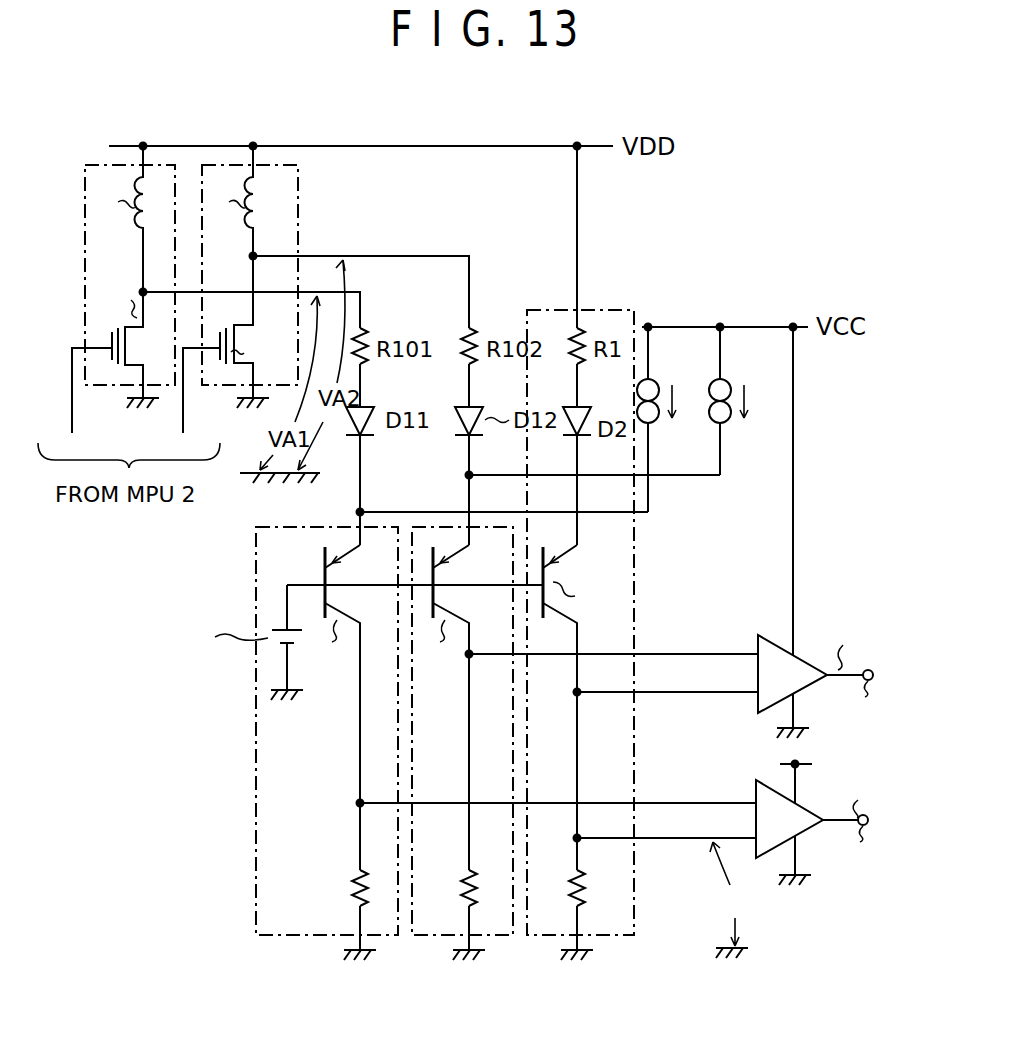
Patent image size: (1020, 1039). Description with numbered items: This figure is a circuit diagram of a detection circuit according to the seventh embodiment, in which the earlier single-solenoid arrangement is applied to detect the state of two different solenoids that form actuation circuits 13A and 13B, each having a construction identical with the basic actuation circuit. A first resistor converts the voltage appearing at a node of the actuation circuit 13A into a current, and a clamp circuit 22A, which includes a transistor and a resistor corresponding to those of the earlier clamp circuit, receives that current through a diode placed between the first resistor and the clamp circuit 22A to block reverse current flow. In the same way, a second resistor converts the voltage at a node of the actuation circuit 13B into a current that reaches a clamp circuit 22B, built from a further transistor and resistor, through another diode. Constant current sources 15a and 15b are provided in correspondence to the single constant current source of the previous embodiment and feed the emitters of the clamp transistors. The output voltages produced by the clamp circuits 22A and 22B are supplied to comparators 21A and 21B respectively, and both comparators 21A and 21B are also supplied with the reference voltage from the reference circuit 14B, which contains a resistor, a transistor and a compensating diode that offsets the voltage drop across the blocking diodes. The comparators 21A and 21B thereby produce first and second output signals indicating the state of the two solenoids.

The actuation circuit 13A is at (83, 247).
The actuation circuit 13B is at (300, 248).
The reference circuit 14B is at (634, 937).
The constant current source 15a is at (655, 421).
The constant current source 15b is at (727, 421).
The comparator 21A is at (757, 780).
The comparator 21B is at (760, 633).
The clamp circuit 22A is at (254, 555).
The clamp circuit 22B is at (433, 937).